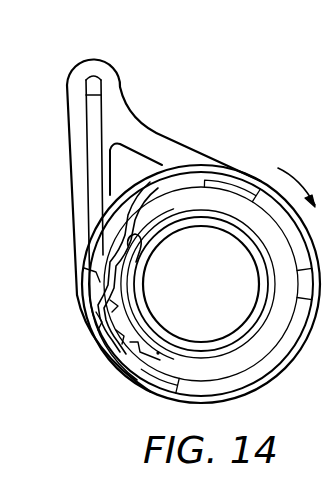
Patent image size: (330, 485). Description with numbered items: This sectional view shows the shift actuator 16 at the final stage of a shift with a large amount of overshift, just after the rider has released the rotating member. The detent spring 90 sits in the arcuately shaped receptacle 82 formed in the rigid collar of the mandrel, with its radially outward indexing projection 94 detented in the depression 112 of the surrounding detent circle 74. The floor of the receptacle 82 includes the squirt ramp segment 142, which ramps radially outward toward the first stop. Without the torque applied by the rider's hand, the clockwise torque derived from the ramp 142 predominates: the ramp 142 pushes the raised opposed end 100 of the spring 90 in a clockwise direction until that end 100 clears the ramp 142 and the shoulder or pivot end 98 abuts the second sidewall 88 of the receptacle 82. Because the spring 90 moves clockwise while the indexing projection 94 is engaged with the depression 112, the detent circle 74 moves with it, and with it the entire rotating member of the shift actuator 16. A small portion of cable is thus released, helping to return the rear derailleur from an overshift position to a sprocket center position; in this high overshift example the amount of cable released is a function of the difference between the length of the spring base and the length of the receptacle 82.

The shift actuator 16 is at (255, 122).
The detent circle 74 is at (140, 372).
The receptacle 82 is at (98, 316).
The second sidewall 88 is at (140, 210).
The detent spring 90 is at (125, 272).
The indexing projection 94 is at (116, 305).
The end 98 is at (68, 236).
The opposed end 100 is at (118, 333).
The detent 112 is at (84, 270).
The squirt ramp segment 142 is at (140, 334).